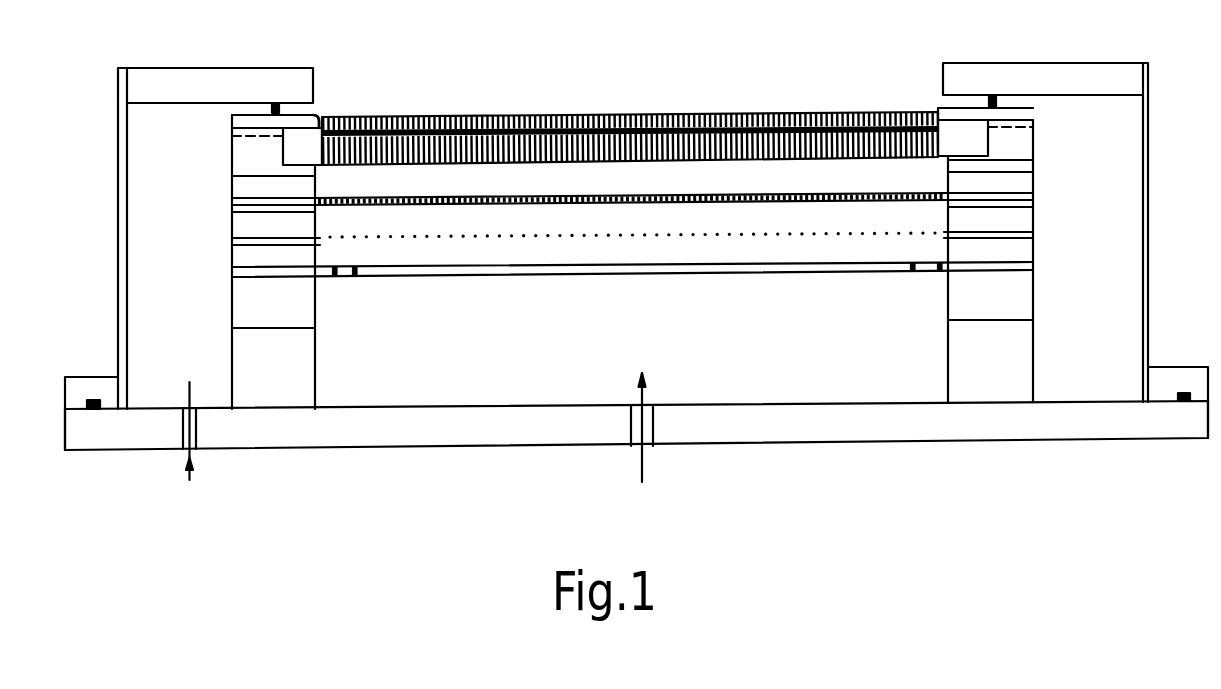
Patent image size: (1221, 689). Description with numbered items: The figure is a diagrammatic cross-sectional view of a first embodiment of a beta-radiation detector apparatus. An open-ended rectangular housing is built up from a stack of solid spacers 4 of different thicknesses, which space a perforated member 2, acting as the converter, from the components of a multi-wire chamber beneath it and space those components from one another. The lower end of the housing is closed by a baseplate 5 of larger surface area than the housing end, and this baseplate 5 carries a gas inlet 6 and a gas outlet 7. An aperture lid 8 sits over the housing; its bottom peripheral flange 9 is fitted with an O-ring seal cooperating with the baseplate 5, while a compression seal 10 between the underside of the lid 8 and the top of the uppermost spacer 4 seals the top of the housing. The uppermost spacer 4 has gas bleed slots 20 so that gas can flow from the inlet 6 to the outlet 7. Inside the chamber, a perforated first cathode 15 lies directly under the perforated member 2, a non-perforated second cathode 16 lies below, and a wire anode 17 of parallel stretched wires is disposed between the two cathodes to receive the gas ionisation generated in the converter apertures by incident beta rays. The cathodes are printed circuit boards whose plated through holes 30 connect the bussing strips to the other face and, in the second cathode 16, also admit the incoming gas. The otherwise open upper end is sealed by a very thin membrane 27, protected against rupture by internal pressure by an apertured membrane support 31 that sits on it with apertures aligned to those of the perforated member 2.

The perforated member 2 is at (757, 160).
The solid spacers 4 is at (308, 228).
The baseplate 5 is at (768, 430).
The gas inlet 6 is at (631, 451).
The gas outlet 7 is at (181, 458).
The aperture lid 8 is at (118, 197).
The bottom peripheral flange 9 is at (93, 376).
The compression seal 10 is at (988, 104).
The perforated first cathode 15 is at (618, 194).
The second cathode 16 is at (590, 276).
The wire anode 17 is at (607, 235).
The gas bleed slots 20 is at (232, 136).
The membrane 27 is at (318, 114).
The plated through holes 30 is at (355, 278).
The membrane support 31 is at (365, 116).